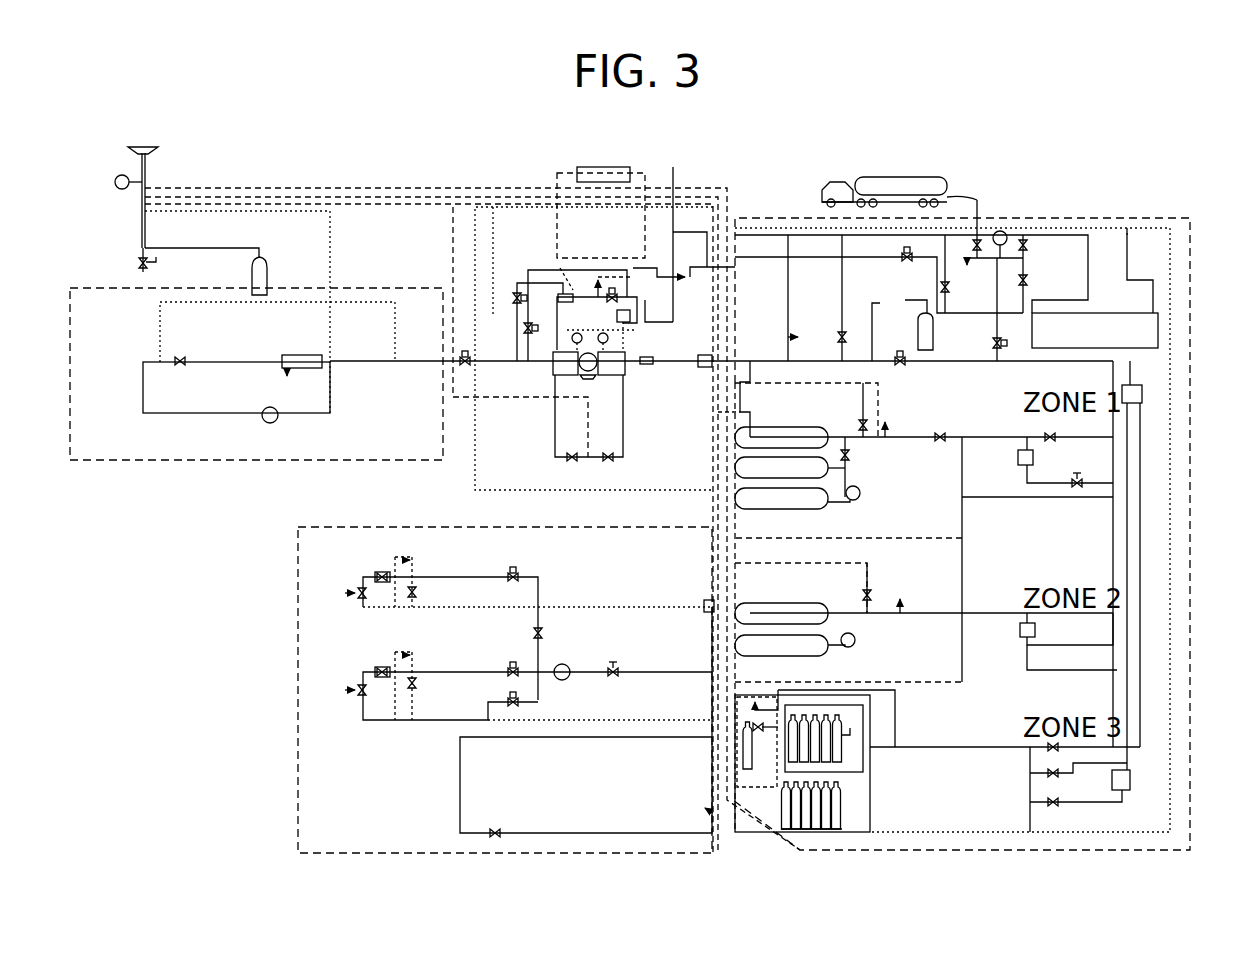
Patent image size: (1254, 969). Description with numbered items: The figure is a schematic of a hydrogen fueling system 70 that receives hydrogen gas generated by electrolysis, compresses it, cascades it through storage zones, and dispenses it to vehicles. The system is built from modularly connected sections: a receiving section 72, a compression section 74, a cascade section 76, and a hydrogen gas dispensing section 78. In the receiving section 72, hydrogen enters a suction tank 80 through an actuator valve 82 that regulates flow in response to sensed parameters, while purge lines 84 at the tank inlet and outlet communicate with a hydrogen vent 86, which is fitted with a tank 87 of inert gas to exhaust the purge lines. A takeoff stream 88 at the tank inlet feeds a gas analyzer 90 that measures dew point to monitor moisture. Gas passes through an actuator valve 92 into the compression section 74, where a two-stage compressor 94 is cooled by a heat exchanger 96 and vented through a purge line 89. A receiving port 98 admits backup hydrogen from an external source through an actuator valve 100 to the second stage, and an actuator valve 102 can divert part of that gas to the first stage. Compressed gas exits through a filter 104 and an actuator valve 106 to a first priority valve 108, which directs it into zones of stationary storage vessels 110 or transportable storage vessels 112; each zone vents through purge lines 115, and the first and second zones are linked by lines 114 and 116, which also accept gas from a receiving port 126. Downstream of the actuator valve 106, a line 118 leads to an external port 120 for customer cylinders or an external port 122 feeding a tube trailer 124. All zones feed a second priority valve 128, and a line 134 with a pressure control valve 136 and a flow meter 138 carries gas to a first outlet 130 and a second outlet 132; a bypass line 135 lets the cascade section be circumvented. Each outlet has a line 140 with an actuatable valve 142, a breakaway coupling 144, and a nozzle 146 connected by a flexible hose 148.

The fueling system 70 is at (412, 133).
The receiving section 72 is at (112, 284).
The compression section 74 is at (470, 463).
The cascade section 76 is at (791, 215).
The hydrogen gas dispensing section 78 is at (292, 739).
The suction tank 80 is at (307, 355).
The actuator valve 82 is at (186, 366).
The purge lines 84 is at (162, 332).
The hydrogen vent 86 is at (147, 170).
The tank of inert gas 87 is at (262, 258).
The takeoff stream 88 is at (148, 400).
The purge line 89 is at (510, 398).
The gas analyzer 90 is at (277, 410).
The actuator valve 92 is at (460, 365).
The compressor 94 is at (606, 386).
The heat exchanger 96 is at (603, 167).
The receiving port 98 is at (673, 173).
The actuator valve 100 is at (673, 287).
The actuator valve 102 is at (575, 314).
The filter 104 is at (703, 368).
The actuator valve 106 is at (901, 366).
The first priority valve 108 is at (1142, 397).
The stationary storage vessels 110 is at (806, 448).
The transportable storage vessels 112 is at (841, 753).
The line 114 is at (1040, 500).
The purge lines 115 is at (758, 387).
The line 116 is at (1113, 530).
The line 118 is at (996, 334).
The external port 120 is at (1022, 232).
The external port 122 is at (983, 238).
The tube trailer 124 is at (906, 180).
The receiving port 126 is at (1127, 232).
The second priority valve 128 is at (1130, 782).
The first outlet 130 is at (545, 593).
The second outlet 132 is at (462, 676).
The line 134 is at (461, 804).
The bypass line 135 is at (713, 507).
The pressure control valve 136 is at (616, 676).
The flow meter 138 is at (563, 680).
The line 140 is at (522, 577).
The actuatable valve 142 is at (513, 570).
The breakaway coupling 144 is at (385, 585).
The nozzle 146 is at (345, 596).
The flexible hose 148 is at (320, 588).